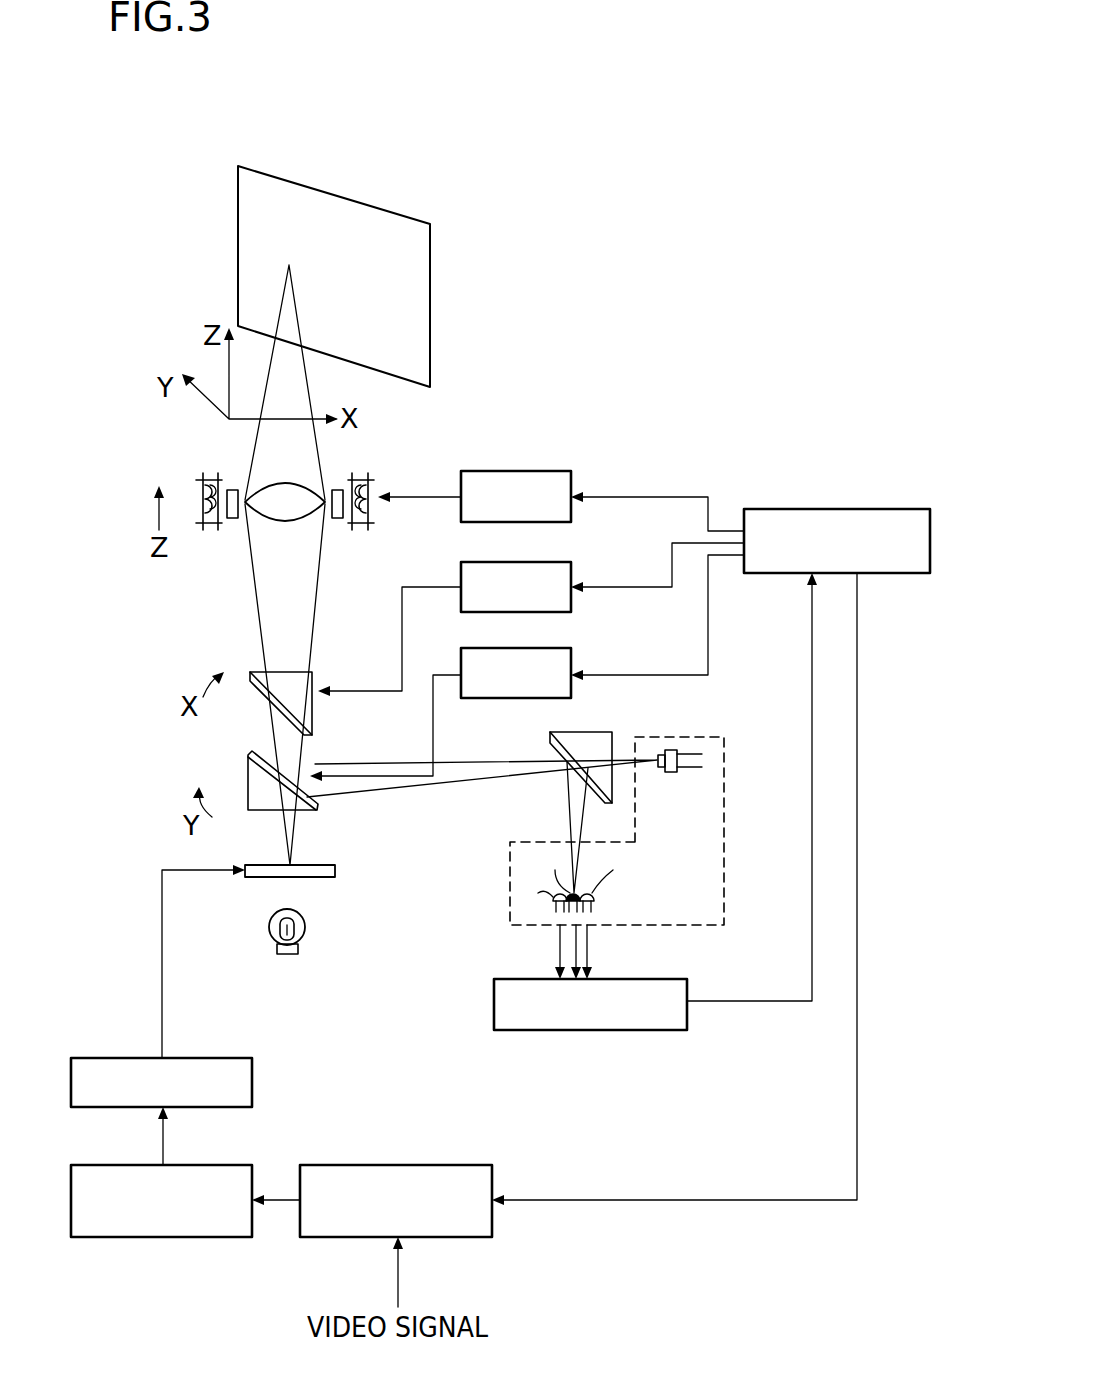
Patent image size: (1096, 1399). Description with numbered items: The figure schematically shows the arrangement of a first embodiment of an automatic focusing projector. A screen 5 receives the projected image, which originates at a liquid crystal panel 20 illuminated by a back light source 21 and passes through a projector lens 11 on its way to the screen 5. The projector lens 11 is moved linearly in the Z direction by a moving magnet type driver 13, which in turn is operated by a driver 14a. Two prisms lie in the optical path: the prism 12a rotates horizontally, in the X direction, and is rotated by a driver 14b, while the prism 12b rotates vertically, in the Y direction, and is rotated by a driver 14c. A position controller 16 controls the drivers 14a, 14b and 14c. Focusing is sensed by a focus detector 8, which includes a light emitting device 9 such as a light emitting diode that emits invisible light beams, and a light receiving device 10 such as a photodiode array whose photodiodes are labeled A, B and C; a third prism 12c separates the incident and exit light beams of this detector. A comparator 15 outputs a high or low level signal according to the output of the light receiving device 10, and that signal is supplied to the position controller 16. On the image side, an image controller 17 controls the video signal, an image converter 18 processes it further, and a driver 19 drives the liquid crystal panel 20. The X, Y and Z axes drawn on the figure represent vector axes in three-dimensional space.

The screen 5 is at (413, 218).
The focus detector 8 is at (724, 844).
The light emitting device 9 is at (684, 745).
The light receiving device 10 is at (604, 896).
The projector lens 11 is at (300, 485).
The prism 12a is at (258, 672).
The prism 12b is at (252, 762).
The prism 12c is at (596, 732).
The moving magnet type driver 13 is at (368, 476).
The driver 14a is at (546, 471).
The driver 14b is at (573, 569).
The driver 14c is at (573, 659).
The comparator 15 is at (661, 979).
The position controller 16 is at (883, 509).
The image controller 17 is at (398, 1165).
The image converter 18 is at (224, 1165).
The driver 19 is at (207, 1058).
The liquid crystal panel 20 is at (331, 865).
The back light source 21 is at (307, 927).